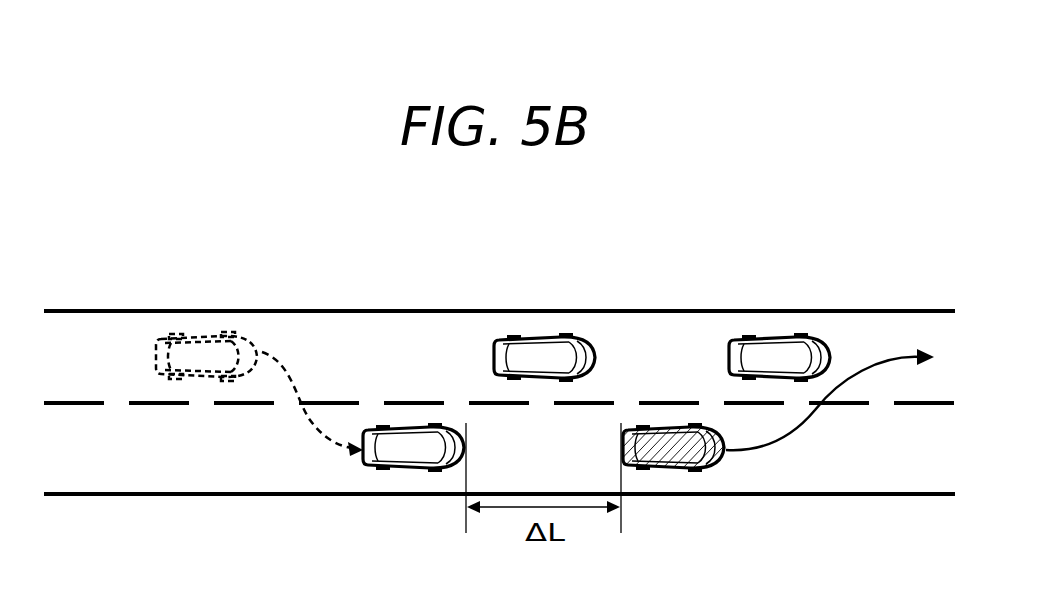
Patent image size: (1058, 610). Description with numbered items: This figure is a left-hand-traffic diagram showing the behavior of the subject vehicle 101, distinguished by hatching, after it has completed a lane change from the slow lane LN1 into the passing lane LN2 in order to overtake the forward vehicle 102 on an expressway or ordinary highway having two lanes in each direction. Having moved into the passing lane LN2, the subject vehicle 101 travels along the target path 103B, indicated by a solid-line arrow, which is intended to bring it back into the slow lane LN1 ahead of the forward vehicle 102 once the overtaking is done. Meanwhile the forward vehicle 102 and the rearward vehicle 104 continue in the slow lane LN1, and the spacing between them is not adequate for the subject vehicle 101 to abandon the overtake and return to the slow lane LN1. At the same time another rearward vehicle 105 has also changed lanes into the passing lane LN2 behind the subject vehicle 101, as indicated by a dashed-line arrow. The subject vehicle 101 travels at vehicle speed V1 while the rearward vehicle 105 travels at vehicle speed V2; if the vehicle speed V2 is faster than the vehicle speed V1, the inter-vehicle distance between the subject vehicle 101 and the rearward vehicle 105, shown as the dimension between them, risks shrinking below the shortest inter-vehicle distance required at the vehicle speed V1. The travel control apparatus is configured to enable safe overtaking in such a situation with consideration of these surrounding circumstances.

The subject vehicle 101 is at (668, 423).
The forward vehicle 102 is at (773, 333).
The rearward vehicle 104 is at (540, 333).
The rearward vehicle 105 is at (410, 423).
The target path 103B is at (800, 423).
The slow lane LN1 is at (72, 337).
The passing lane LN2 is at (106, 475).
The vehicle speed of the subject vehicle V1 is at (641, 478).
The vehicle speed of the rearward vehicle V2 is at (447, 478).